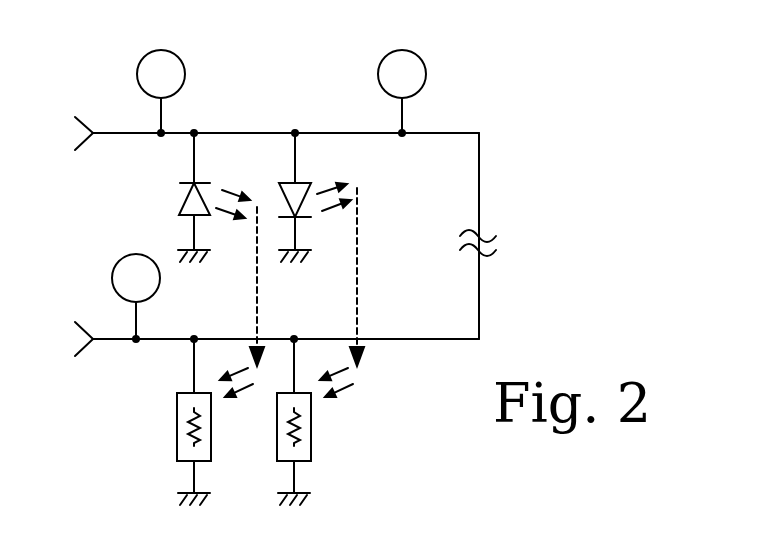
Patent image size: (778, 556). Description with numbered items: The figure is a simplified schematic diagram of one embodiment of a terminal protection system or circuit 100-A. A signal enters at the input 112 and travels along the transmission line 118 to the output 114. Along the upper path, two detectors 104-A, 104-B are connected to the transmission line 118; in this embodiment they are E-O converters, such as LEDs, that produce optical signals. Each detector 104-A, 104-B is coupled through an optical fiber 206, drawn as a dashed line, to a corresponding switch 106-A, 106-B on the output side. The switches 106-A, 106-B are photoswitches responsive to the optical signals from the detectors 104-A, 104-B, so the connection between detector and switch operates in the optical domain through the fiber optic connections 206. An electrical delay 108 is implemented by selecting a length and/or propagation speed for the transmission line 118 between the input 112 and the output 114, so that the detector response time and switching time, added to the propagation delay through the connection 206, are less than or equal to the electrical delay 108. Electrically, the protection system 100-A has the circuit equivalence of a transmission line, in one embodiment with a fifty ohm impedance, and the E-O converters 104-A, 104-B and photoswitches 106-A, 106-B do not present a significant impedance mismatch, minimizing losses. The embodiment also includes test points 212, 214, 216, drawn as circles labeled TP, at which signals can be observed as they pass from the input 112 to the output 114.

The terminal protection system 100-A is at (567, 69).
The detector 104-A is at (180, 208).
The detector 104-B is at (302, 180).
The switch 106-A is at (177, 428).
The switch 106-B is at (311, 430).
The electrical delay 108 is at (480, 205).
The input 112 is at (110, 132).
The output 114 is at (108, 333).
The transmission line 118 is at (455, 134).
The optical fiber 206 is at (357, 265).
The test point 212 is at (185, 74).
The test point 214 is at (426, 74).
The test point 216 is at (160, 278).